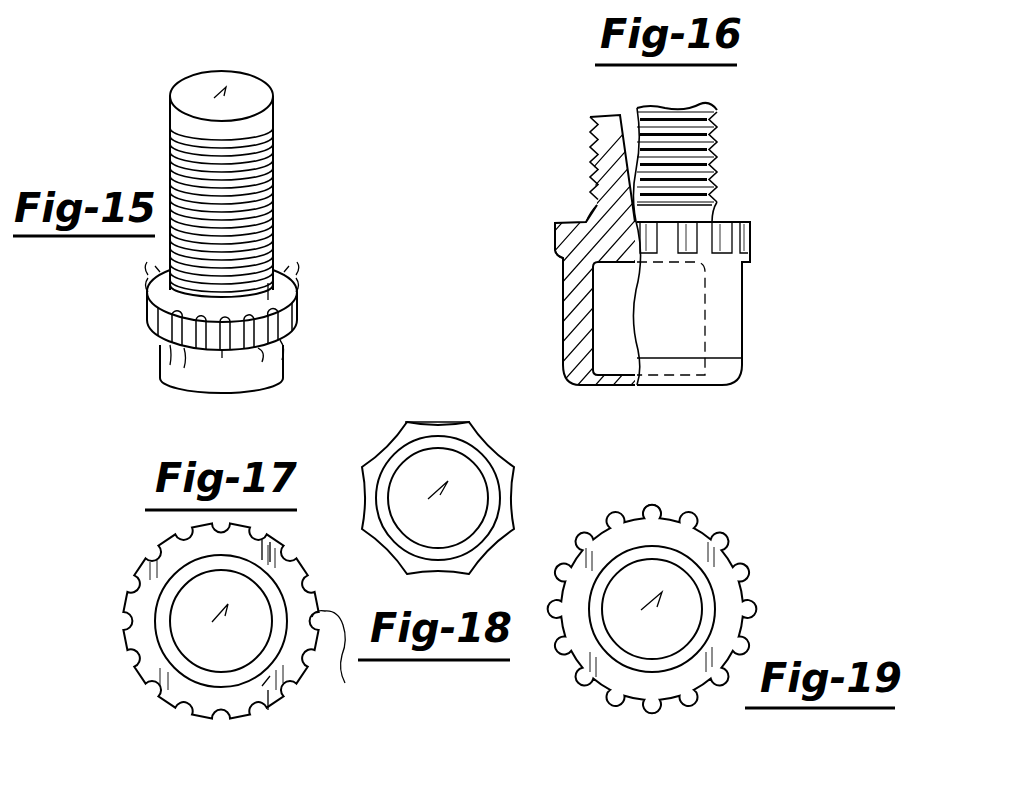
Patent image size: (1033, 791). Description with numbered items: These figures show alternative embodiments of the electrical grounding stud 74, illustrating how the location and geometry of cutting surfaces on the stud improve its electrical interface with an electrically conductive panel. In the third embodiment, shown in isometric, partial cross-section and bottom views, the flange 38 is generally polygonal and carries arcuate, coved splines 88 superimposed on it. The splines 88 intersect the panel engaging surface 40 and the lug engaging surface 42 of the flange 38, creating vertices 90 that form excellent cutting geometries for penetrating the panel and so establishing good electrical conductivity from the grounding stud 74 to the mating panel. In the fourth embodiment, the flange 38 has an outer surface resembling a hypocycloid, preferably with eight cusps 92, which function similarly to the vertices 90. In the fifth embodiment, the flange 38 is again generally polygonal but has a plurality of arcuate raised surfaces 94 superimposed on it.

In FIG. 15, the flange 38 is at (312, 285).
In FIG. 16, the flange 38 is at (770, 262).
In FIG. 17, the flange 38 is at (287, 575).
In FIG. 18, the flange 38 is at (505, 497).
In FIG. 19, the flange 38 is at (712, 558).
In FIG. 15, the panel engaging surface 40 is at (233, 352).
In FIG. 16, the panel engaging surface 40 is at (552, 252).
In FIG. 15, the lug engaging surface 42 is at (278, 290).
In FIG. 16, the lug engaging surface 42 is at (575, 215).
In FIG. 17, the lug engaging surface 42 is at (280, 678).
In FIG. 15, the electrical grounding stud 74 is at (310, 152).
In FIG. 16, the electrical grounding stud 74 is at (752, 170).
In FIG. 17, the electrical grounding stud 74 is at (190, 722).
In FIG. 18, the electrical grounding stud 74 is at (478, 578).
In FIG. 19, the electrical grounding stud 74 is at (592, 695).
In FIG. 15, the arcuate, coved splines 88 is at (283, 366).
In FIG. 17, the arcuate, coved splines 88 is at (288, 558).
In FIG. 15, the vertices 90 is at (192, 355).
In FIG. 16, the vertices 90 is at (553, 248).
In FIG. 17, the vertices 90 is at (307, 594).
In FIG. 18, the cusps 92 is at (470, 420).
In FIG. 19, the arcuate raised surfaces 94 is at (650, 508).